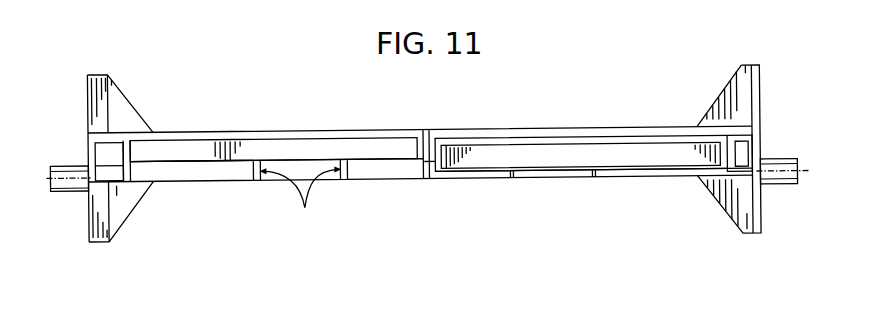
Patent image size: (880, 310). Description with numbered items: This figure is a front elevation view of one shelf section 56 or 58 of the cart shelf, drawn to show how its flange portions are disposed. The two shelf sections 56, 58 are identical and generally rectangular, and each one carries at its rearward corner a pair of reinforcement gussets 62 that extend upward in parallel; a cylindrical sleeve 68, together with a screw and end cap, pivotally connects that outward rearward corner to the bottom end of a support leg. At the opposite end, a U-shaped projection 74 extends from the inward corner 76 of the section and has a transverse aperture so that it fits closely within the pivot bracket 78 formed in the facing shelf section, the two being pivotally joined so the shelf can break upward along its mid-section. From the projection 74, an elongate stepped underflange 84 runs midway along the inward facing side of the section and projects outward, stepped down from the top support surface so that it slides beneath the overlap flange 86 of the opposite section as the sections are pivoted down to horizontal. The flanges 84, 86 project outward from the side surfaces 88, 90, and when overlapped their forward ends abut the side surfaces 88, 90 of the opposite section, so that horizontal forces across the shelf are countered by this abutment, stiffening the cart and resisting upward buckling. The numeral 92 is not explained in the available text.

The shelf section 56 is at (420, 134).
The shelf section 58 is at (387, 125).
The reinforcement gusset 62 is at (122, 223).
The cylindrical sleeve 68 is at (68, 194).
The U-shaped projection 74 is at (752, 140).
The inward corner 76 is at (755, 156).
The pivot bracket 78 is at (88, 150).
The stepped underflange 84 is at (617, 142).
The overlap flange 86 is at (287, 133).
The side surface 88 is at (545, 136).
The side surface 90 is at (201, 160).
The strip segment 92 is at (300, 204).